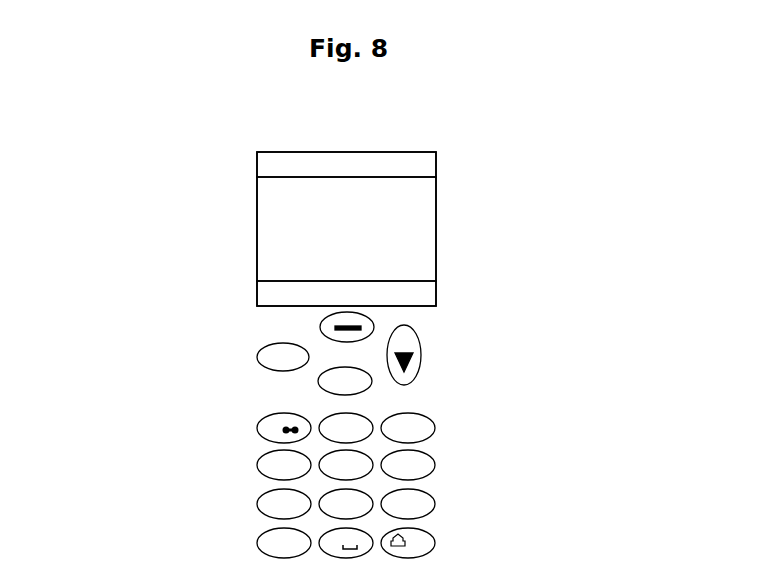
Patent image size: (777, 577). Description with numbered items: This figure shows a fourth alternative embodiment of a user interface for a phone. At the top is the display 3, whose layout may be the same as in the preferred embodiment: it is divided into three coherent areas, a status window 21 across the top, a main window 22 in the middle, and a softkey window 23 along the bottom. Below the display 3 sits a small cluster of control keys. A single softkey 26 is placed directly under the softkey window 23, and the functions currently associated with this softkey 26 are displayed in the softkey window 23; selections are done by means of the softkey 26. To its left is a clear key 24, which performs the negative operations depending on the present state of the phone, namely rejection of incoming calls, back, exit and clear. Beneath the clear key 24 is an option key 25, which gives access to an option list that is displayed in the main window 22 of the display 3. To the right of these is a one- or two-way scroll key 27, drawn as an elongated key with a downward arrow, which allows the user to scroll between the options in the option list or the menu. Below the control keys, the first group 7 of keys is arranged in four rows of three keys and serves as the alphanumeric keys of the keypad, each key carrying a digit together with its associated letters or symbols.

The display 3 is at (480, 207).
The first group of keys 7 is at (203, 454).
The status window 21 is at (255, 153).
The main window 22 is at (255, 219).
The softkey window 23 is at (262, 297).
The clear key 24 is at (255, 351).
The option key 25 is at (318, 388).
The softkey 26 is at (374, 322).
The scroll key 27 is at (422, 363).